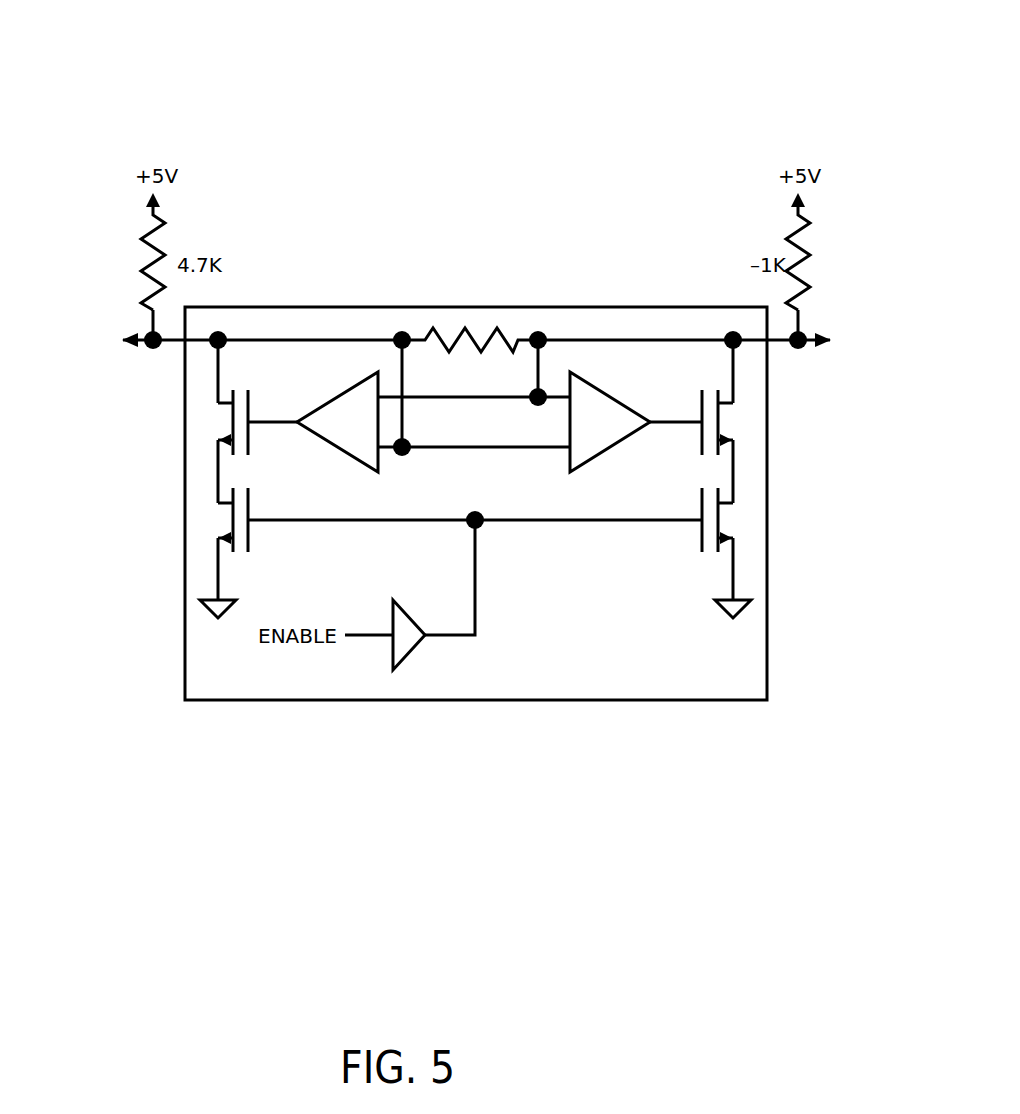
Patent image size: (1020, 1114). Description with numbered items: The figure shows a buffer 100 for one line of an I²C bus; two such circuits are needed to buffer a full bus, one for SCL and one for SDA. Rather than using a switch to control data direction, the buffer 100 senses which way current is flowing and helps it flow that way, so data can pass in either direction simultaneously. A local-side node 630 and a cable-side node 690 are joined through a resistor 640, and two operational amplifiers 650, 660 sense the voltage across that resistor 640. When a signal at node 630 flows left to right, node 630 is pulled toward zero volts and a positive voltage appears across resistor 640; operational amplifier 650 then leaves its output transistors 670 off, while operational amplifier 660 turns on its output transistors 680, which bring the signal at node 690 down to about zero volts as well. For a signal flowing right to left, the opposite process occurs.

The buffer 100 is at (276, 160).
The node 630 is at (134, 346).
The resistor 640 is at (475, 328).
The operational amplifier 650 is at (338, 455).
The operational amplifier 660 is at (605, 453).
The output transistors 670 is at (218, 520).
The output transistors 680 is at (735, 422).
The node 690 is at (820, 348).